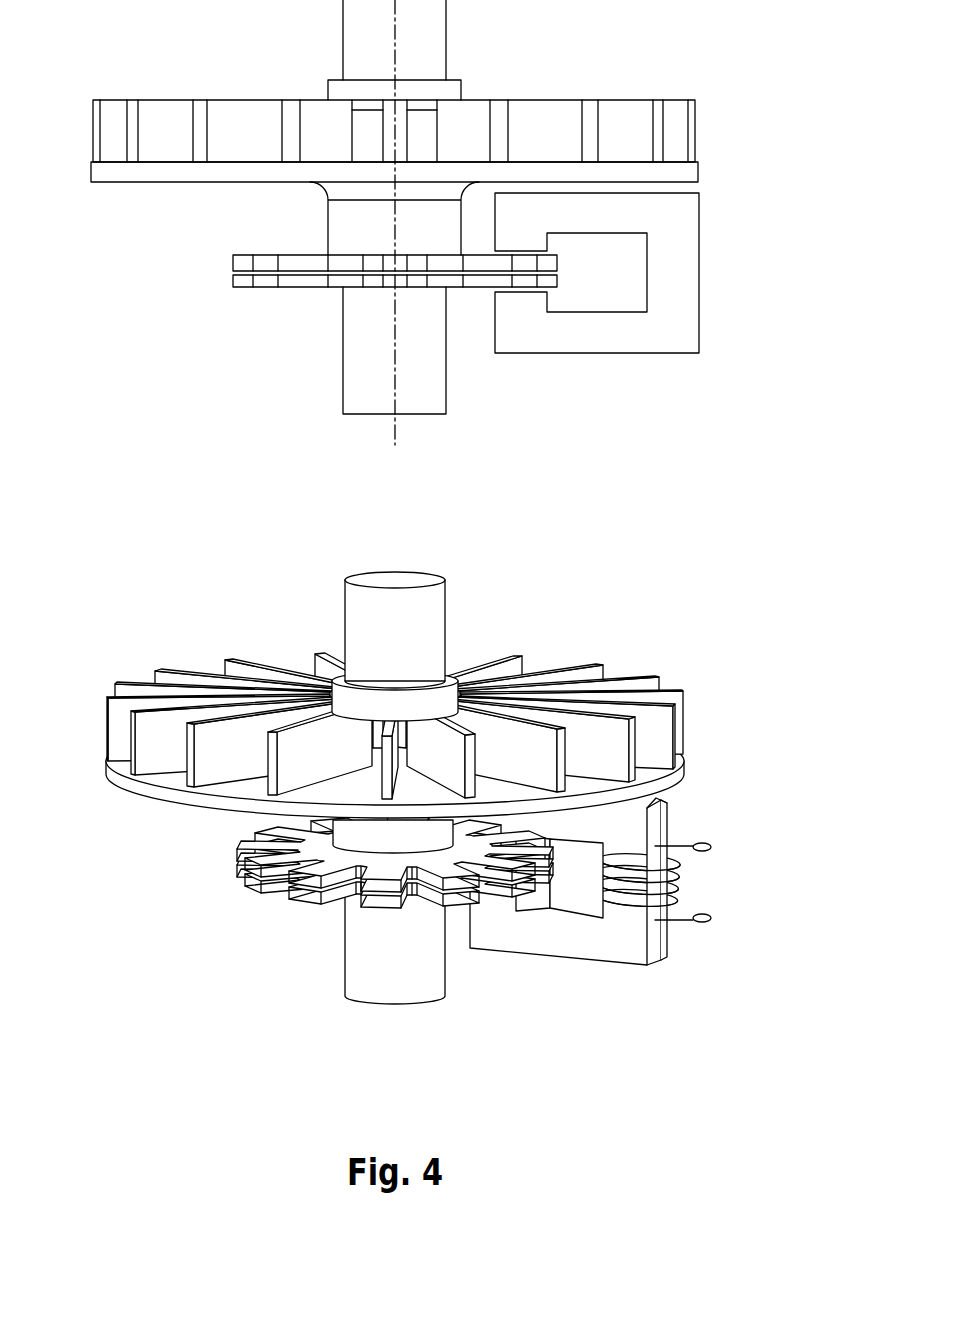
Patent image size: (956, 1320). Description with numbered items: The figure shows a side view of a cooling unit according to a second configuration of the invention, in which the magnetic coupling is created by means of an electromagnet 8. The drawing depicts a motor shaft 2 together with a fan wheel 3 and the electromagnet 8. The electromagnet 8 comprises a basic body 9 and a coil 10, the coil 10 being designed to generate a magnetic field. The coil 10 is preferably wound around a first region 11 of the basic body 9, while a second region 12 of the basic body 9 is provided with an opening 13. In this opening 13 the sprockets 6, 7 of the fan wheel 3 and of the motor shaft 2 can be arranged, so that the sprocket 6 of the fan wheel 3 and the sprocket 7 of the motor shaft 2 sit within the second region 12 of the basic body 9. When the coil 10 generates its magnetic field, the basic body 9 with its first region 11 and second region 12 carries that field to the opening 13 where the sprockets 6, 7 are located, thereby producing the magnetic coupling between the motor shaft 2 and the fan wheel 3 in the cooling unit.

The motor shaft 2 is at (375, 386).
The fan wheel 3 is at (157, 190).
The sprocket 6 is at (227, 260).
The sprocket 7 is at (243, 292).
The electromagnet 8 is at (644, 625).
The basic body 9 is at (644, 608).
The coil 10 is at (713, 911).
The first region 11 is at (687, 882).
The second region 12 is at (545, 946).
The opening 13 is at (497, 897).